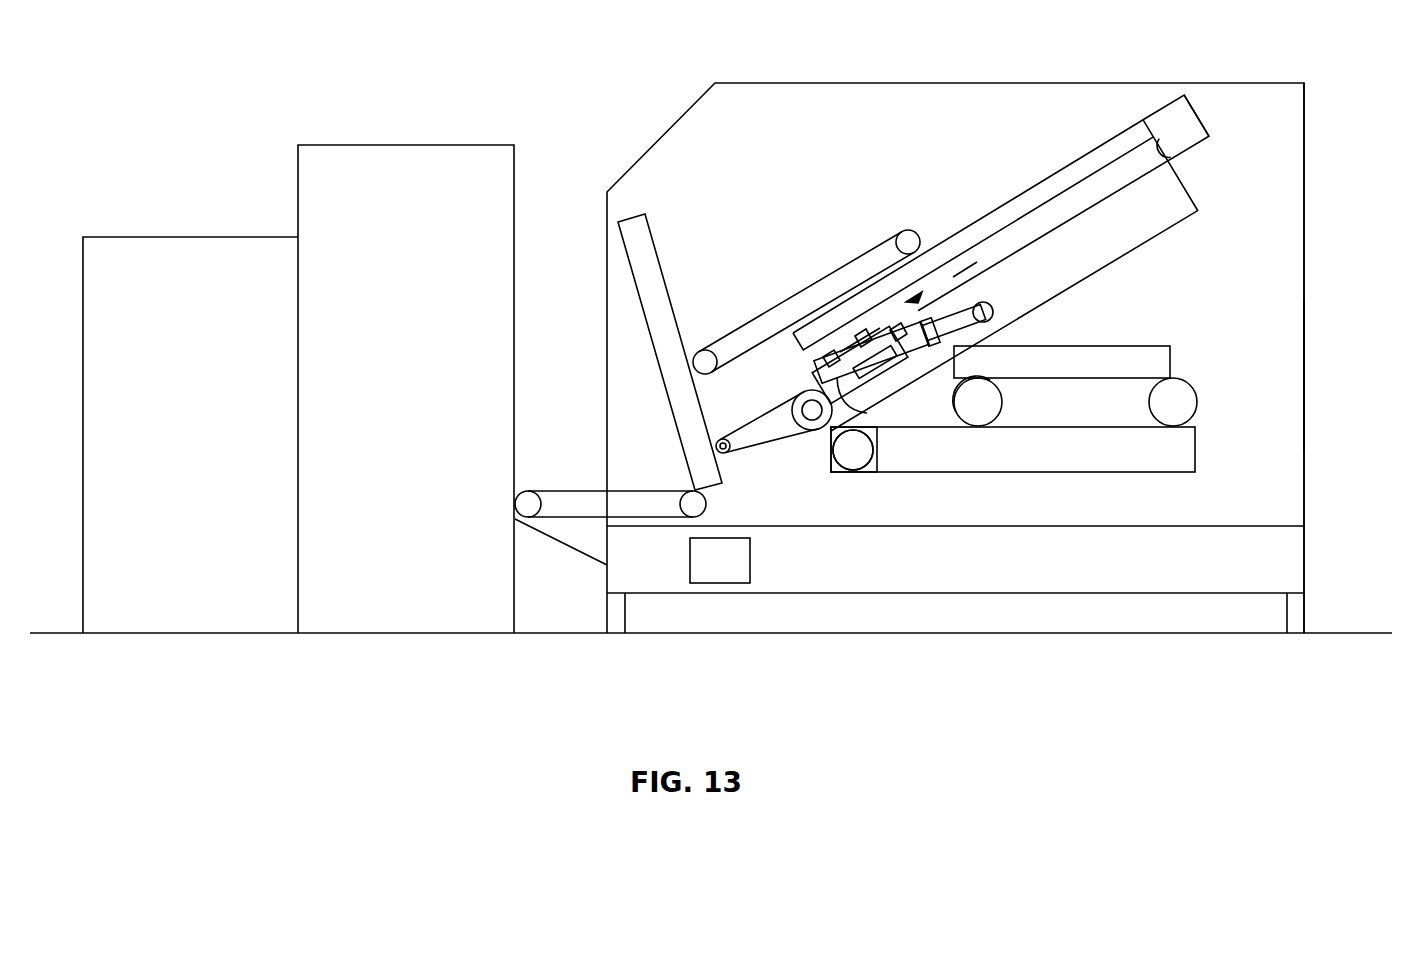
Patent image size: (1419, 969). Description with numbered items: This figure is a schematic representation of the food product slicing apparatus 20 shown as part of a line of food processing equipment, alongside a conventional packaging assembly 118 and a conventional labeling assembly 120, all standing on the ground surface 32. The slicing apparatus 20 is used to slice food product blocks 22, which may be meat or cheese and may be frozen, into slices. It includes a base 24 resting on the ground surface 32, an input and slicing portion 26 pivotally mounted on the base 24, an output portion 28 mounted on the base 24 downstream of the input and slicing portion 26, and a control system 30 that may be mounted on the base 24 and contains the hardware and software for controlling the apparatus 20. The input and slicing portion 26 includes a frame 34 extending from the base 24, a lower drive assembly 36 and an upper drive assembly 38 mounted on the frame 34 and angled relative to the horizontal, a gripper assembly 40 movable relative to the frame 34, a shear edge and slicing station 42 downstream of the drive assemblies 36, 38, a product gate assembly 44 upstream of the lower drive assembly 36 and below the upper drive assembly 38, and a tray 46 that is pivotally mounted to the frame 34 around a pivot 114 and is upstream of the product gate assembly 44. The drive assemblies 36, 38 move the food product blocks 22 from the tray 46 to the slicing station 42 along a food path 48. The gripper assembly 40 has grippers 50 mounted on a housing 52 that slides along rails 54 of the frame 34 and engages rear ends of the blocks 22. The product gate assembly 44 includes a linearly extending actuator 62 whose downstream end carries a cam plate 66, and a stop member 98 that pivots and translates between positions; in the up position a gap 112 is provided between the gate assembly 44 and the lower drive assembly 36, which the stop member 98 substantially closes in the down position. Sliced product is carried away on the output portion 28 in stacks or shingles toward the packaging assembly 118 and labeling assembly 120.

The food product slicing apparatus 20 is at (1335, 109).
The food product blocks 22 is at (1120, 346).
The base 24 is at (1316, 556).
The input and slicing portion 26 is at (1312, 222).
The output portion 28 is at (563, 480).
The control system 30 is at (738, 576).
The ground surface 32 is at (1352, 631).
The frame 34 is at (1297, 378).
The lower drive assembly 36 is at (782, 456).
The upper drive assembly 38 is at (850, 248).
The gripper assembly 40 is at (1105, 135).
The shear edge and slicing station 42 is at (628, 200).
The product gate assembly 44 is at (850, 332).
The tray 46 is at (1075, 484).
The food path 48 is at (960, 268).
The grippers 50 is at (1203, 124).
The housing 52 is at (1160, 95).
The rails 54 is at (1080, 163).
The actuator 62 is at (995, 322).
The cam plate 66 is at (882, 340).
The stop member 98 is at (878, 400).
The gap 112 is at (866, 467).
The pivot 114 is at (837, 473).
The packaging assembly 118 is at (428, 145).
The labeling assembly 120 is at (175, 237).